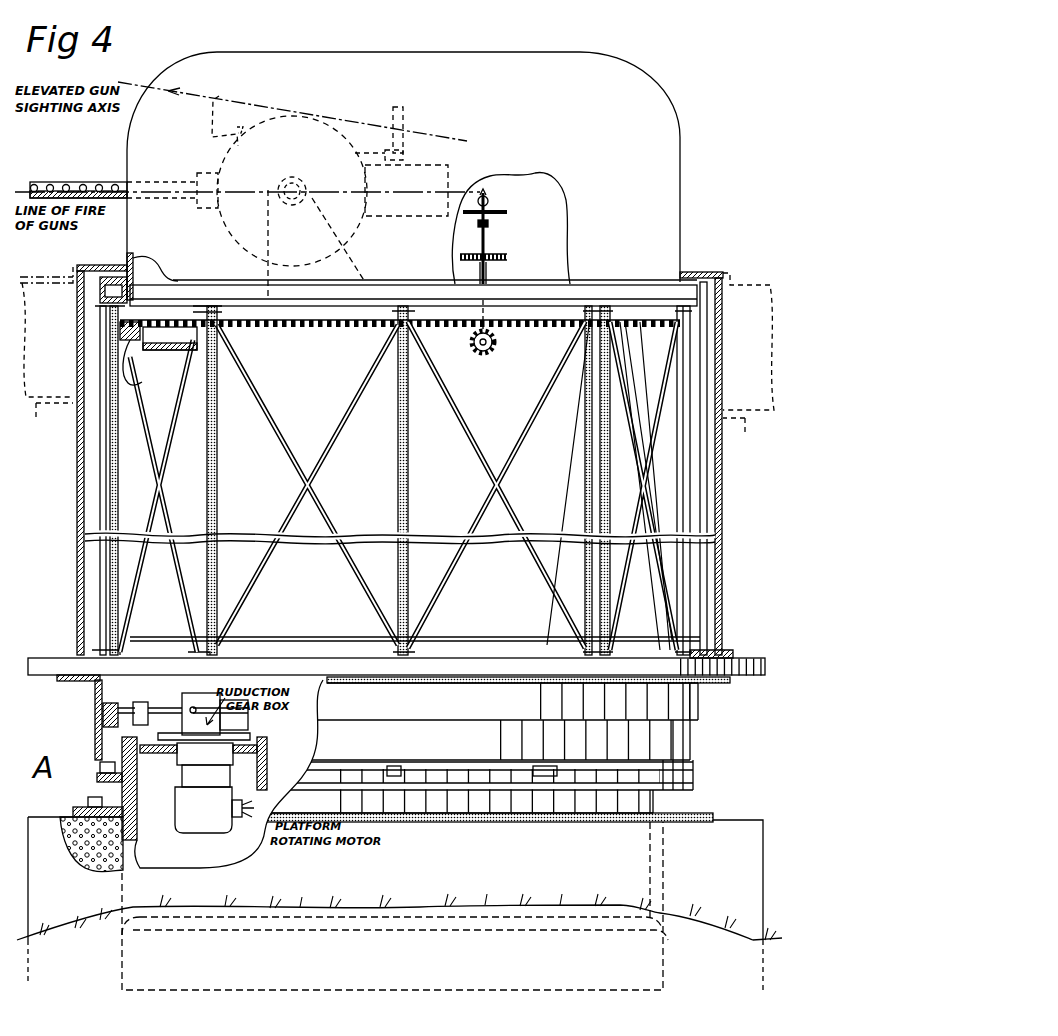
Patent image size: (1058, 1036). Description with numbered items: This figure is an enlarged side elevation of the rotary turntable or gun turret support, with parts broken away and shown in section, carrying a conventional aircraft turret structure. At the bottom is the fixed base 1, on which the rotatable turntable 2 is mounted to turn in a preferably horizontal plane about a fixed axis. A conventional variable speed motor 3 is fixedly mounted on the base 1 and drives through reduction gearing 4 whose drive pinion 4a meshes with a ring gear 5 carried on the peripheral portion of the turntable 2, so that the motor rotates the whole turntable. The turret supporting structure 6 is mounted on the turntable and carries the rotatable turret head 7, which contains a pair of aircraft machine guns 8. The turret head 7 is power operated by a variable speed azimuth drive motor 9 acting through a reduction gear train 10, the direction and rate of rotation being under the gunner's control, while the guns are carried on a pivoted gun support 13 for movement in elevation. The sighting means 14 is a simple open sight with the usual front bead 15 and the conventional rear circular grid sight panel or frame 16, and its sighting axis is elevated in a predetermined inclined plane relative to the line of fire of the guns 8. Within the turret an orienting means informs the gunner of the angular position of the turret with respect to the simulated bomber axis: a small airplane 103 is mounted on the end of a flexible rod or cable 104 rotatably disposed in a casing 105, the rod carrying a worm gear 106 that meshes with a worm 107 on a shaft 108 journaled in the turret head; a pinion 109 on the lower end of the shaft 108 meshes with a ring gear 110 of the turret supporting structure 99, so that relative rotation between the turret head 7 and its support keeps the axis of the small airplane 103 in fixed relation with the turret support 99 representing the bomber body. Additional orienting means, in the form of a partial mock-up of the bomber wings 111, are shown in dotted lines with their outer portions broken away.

The fixed base 1 is at (745, 838).
The turntable 2 is at (756, 672).
The variable speed motor 3 is at (185, 777).
The reduction gearing 4 is at (184, 716).
The drive pinion 4a is at (140, 701).
The ring gear 5 is at (100, 716).
The turret supporting structure 6 is at (250, 475).
The turret head 7 is at (127, 151).
The aircraft machine guns 8 is at (85, 184).
The azimuth drive motor 9 is at (170, 350).
The reduction gear train 10 is at (135, 387).
The pivoted gun support 13 is at (293, 189).
The sighting means 14 is at (243, 128).
The front bead 15 is at (220, 96).
The rear circular grid sight panel 16 is at (405, 114).
The turret supporting structure 99 is at (212, 448).
The small airplane 103 is at (489, 200).
The flexible rod or cable 104 is at (502, 213).
The casing 105 is at (491, 226).
The worm gear 106 is at (461, 256).
The worm 107 is at (490, 247).
The shaft 108 is at (490, 271).
The pinion 109 is at (492, 352).
The ring gear 110 is at (521, 330).
The mock-up wings 111 is at (36, 412).